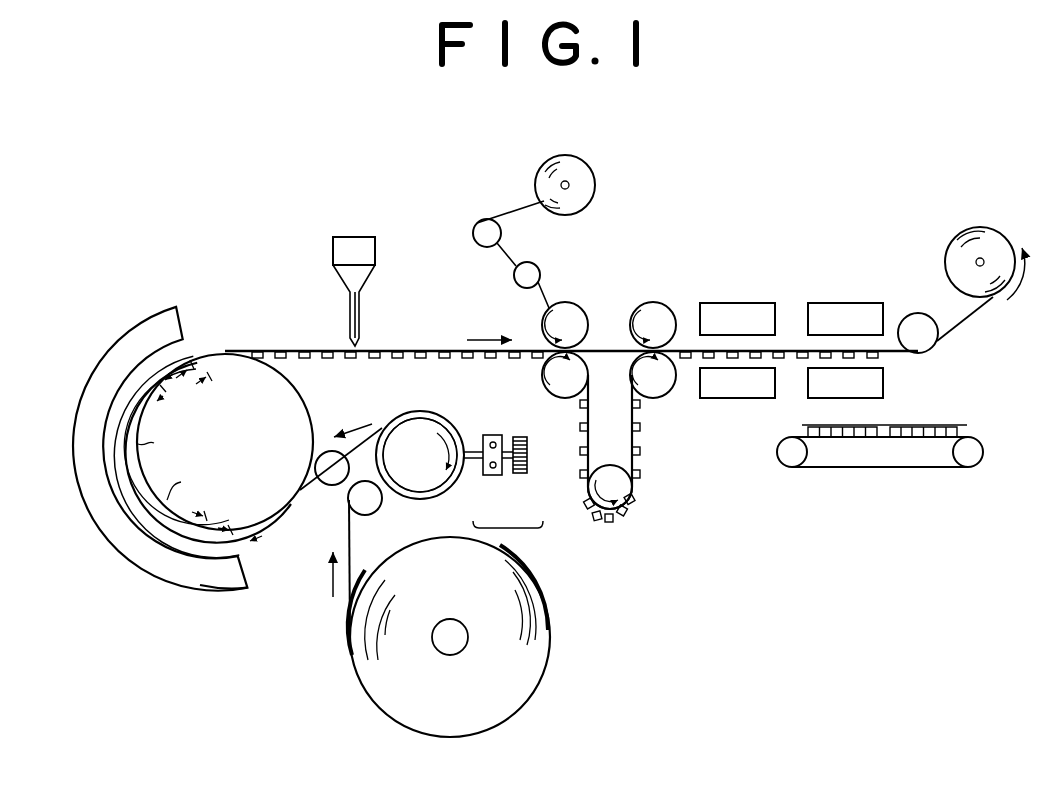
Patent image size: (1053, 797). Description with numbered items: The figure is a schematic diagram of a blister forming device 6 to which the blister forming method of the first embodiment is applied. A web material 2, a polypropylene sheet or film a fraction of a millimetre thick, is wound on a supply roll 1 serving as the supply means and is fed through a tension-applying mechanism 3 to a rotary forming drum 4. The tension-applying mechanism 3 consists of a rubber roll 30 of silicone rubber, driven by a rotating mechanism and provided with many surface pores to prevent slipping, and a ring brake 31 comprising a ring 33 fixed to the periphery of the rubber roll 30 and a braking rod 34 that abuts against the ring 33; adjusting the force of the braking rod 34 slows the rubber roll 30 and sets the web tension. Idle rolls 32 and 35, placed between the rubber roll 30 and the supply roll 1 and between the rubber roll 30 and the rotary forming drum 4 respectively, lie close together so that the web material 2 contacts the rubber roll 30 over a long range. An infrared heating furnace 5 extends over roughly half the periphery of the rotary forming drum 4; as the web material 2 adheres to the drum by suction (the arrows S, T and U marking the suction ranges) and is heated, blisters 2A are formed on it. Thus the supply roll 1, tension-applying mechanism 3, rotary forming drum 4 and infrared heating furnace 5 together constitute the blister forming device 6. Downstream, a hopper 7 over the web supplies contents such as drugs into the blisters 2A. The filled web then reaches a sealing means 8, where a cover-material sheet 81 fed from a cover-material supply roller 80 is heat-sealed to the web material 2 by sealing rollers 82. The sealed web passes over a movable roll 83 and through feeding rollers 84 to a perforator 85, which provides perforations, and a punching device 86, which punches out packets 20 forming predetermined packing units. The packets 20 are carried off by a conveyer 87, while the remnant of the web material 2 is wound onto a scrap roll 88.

The supply roll 1 is at (455, 643).
The web material 2 is at (350, 545).
The blisters 2A is at (450, 358).
The tension-applying mechanism 3 is at (414, 411).
The rotary forming drum 4 is at (218, 352).
The infrared heating furnace 5 is at (125, 323).
The blister forming device 6 is at (170, 587).
The hopper 7 is at (333, 256).
The sealing means 8 is at (528, 318).
The packets 20 is at (913, 425).
The rubber roll 30 is at (417, 479).
The ring brake 31 is at (508, 539).
The idle roll 32 is at (347, 502).
The ring 33 is at (483, 476).
The braking rod 34 is at (510, 475).
The idle roll 35 is at (326, 451).
The cover-material supply roller 80 is at (570, 185).
The cover-material sheet 81 is at (513, 252).
The sealing rollers 82 is at (585, 368).
The movable roll 83 is at (634, 470).
The feeding rollers 84 is at (672, 372).
The perforator 85 is at (743, 303).
The punching device 86 is at (835, 303).
The conveyer 87 is at (955, 467).
The scrap roll 88 is at (977, 261).